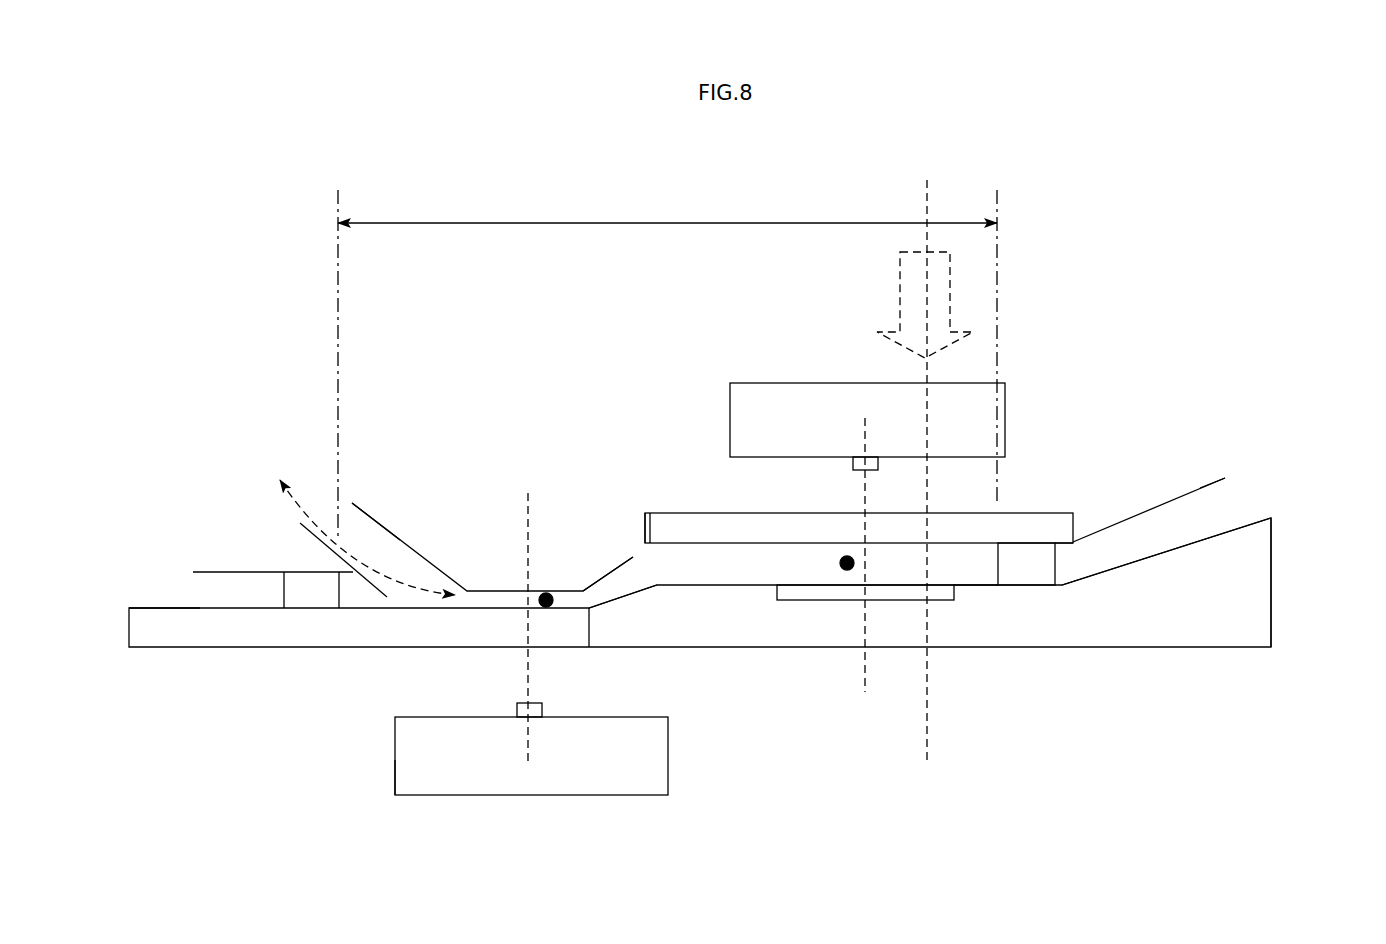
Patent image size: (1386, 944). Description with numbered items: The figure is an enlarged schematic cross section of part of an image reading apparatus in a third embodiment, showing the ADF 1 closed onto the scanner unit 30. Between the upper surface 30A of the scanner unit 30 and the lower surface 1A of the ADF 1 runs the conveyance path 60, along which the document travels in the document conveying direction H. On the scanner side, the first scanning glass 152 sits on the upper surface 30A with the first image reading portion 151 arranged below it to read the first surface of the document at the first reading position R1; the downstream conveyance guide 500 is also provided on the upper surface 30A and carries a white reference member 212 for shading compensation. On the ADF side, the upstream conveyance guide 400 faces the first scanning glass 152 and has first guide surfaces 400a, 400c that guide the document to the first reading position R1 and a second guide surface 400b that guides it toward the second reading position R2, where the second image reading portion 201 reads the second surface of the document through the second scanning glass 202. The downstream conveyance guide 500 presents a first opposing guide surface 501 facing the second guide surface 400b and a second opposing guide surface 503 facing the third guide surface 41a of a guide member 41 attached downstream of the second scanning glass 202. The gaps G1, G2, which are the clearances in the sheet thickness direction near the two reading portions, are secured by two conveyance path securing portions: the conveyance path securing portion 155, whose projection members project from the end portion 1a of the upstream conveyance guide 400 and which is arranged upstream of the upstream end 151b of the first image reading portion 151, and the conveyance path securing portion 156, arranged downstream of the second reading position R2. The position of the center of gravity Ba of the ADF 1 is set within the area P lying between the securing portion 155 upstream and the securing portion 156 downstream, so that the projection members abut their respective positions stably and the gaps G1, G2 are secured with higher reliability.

The ADF 1 is at (1235, 386).
The end portion 1a is at (215, 572).
The lower surface 1A is at (1068, 545).
The scanner unit 30 is at (1278, 556).
The upper surface 30A is at (960, 578).
The guide member 41 is at (1152, 497).
The third guide surface 41a is at (1188, 495).
The conveyance path 60 is at (647, 556).
The first image reading portion 151 is at (415, 757).
The upstream end 151b is at (395, 773).
The first scanning glass 152 is at (152, 607).
The conveyance path securing portion 155 is at (300, 600).
The conveyance path securing portion 156 is at (1033, 573).
The second image reading portion 201 is at (988, 402).
The second scanning glass 202 is at (1030, 512).
The white reference member 212 is at (790, 602).
The upstream conveyance guide 400 is at (431, 560).
The first guide surface 400a is at (376, 520).
The second guide surface 400b is at (628, 572).
The first guide surface 400c is at (322, 542).
The downstream conveyance guide 500 is at (1150, 656).
The first opposing guide surface 501 is at (628, 588).
The second opposing guide surface 503 is at (1147, 553).
The area P is at (667, 363).
The center of gravity Ba is at (900, 263).
The first reading position R1 is at (530, 618).
The second reading position R2 is at (864, 568).
The document conveying direction H is at (283, 480).
The gap G1 is at (552, 596).
The gap G2 is at (843, 560).